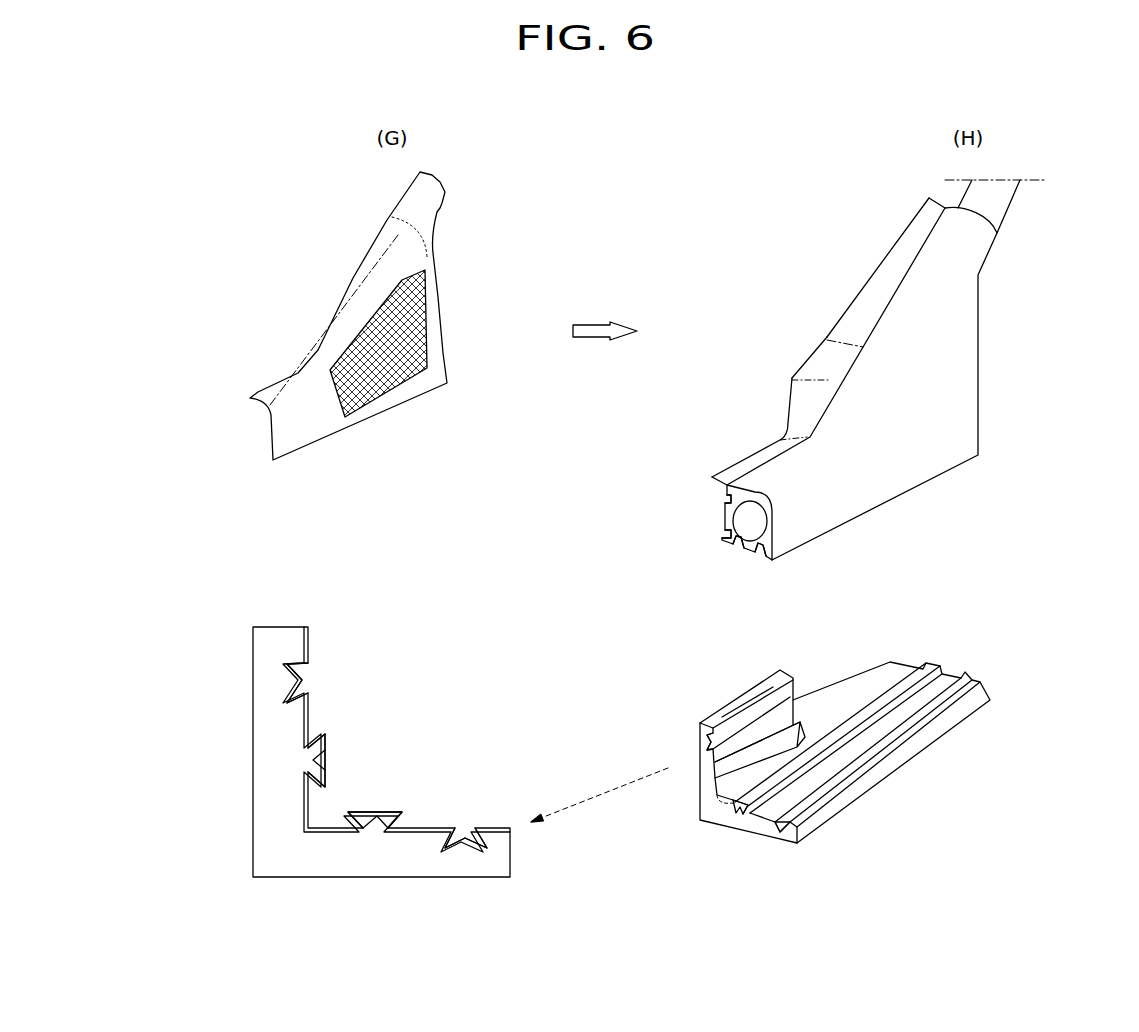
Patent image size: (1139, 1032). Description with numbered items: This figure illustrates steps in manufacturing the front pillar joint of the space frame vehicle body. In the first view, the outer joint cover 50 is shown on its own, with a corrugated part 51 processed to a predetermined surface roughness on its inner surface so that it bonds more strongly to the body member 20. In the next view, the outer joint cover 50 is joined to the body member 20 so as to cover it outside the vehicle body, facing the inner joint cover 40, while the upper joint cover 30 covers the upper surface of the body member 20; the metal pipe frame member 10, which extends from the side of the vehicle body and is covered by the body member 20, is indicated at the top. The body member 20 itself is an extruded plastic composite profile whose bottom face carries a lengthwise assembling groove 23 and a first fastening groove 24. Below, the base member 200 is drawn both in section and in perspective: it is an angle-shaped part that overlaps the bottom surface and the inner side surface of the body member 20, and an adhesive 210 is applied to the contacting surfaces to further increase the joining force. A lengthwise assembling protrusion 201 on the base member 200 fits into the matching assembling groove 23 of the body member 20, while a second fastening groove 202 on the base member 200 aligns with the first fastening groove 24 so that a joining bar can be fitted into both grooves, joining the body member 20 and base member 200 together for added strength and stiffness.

The frame member 10 is at (997, 208).
The body member 20 is at (722, 537).
The assembling groove 23 is at (727, 523).
The first fastening groove 24 is at (727, 495).
The upper joint cover 30 is at (888, 273).
The inner joint cover 40 is at (807, 360).
The outer joint cover 50 is at (352, 290).
The corrugated part 51 is at (387, 383).
The base member 200 is at (287, 803).
The assembling protrusion 201 is at (310, 757).
The second fastening groove 202 is at (297, 682).
The adhesive 210 is at (310, 657).